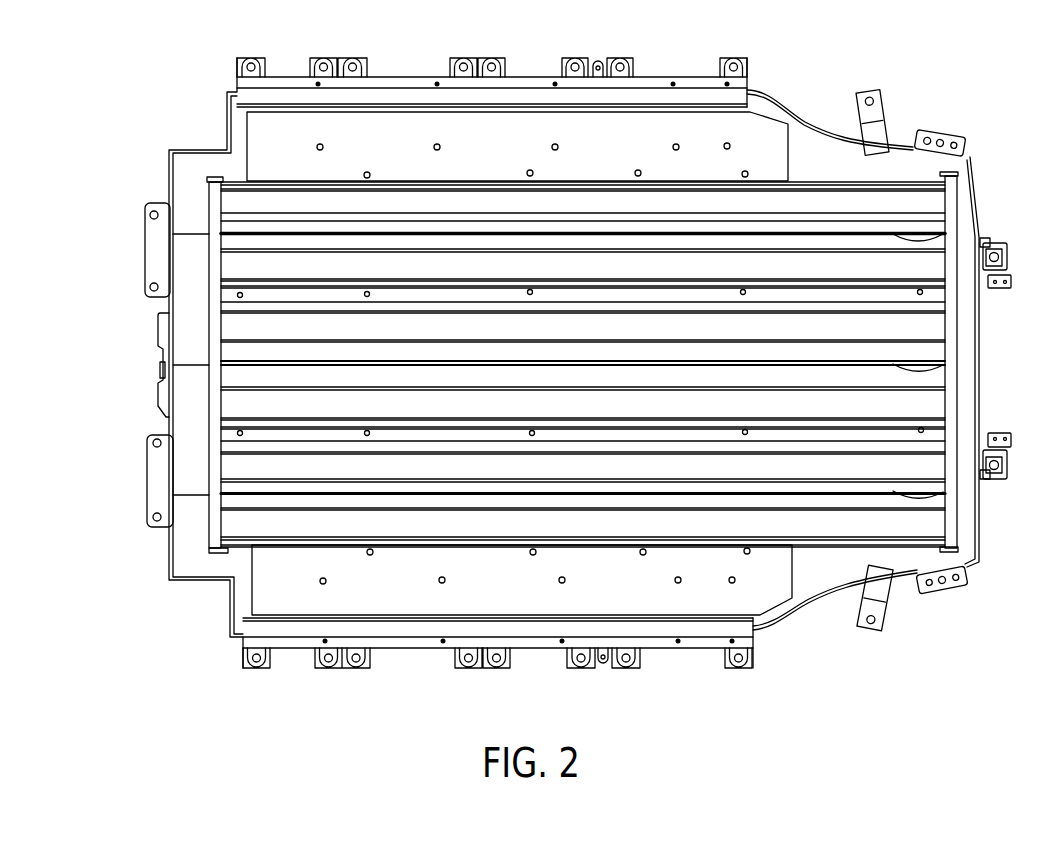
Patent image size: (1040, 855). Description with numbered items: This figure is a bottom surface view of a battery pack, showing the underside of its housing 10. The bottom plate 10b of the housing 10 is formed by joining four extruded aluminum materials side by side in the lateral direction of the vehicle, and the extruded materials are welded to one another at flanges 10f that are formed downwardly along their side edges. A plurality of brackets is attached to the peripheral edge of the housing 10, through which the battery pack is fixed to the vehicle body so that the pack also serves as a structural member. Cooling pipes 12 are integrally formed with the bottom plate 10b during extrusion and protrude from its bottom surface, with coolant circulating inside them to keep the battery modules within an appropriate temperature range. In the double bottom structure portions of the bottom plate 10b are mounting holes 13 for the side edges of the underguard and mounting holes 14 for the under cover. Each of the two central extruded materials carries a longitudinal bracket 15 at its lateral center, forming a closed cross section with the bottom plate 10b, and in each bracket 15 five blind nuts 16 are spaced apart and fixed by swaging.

The housing 10 is at (898, 122).
The bottom plate 10b is at (812, 152).
The flanges 10f is at (940, 226).
The cooling pipes 12 is at (345, 273).
The mounting holes 13 is at (533, 173).
The mounting holes 14 is at (440, 147).
The bracket 15 is at (710, 290).
The blind nuts 16 is at (532, 290).